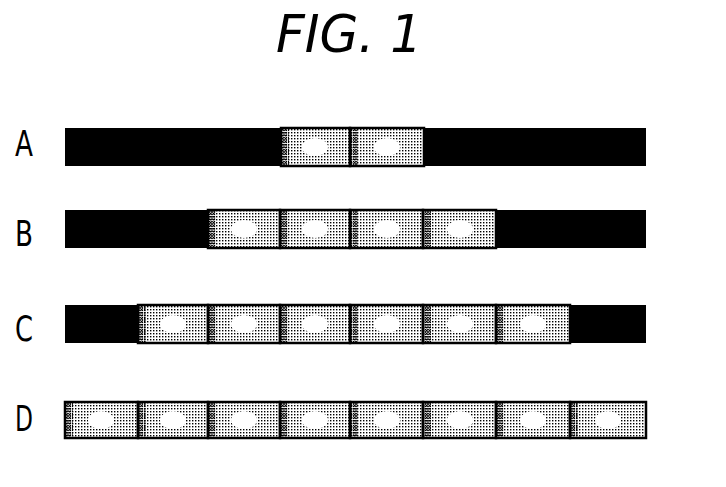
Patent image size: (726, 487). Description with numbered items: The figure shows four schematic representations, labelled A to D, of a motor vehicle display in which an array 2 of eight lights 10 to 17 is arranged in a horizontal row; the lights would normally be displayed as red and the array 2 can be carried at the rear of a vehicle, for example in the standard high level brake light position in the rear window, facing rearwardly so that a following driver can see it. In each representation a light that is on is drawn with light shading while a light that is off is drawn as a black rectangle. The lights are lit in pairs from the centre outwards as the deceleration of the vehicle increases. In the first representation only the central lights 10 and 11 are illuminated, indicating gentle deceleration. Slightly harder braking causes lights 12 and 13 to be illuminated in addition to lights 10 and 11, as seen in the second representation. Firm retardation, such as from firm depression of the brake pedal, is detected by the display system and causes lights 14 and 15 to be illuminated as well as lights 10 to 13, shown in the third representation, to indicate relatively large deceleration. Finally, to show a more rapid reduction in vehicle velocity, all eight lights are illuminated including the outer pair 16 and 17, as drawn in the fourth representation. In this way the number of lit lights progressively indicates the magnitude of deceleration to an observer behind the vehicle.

The array of lights 2 is at (590, 114).
The central light 10 is at (316, 138).
The central light 11 is at (396, 128).
The light 12 is at (260, 218).
The light 13 is at (463, 218).
The light 14 is at (175, 313).
The light 15 is at (545, 315).
The outer light 16 is at (104, 410).
The outer light 17 is at (626, 410).